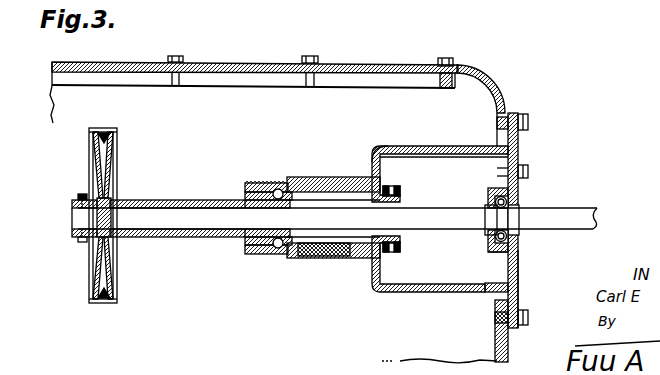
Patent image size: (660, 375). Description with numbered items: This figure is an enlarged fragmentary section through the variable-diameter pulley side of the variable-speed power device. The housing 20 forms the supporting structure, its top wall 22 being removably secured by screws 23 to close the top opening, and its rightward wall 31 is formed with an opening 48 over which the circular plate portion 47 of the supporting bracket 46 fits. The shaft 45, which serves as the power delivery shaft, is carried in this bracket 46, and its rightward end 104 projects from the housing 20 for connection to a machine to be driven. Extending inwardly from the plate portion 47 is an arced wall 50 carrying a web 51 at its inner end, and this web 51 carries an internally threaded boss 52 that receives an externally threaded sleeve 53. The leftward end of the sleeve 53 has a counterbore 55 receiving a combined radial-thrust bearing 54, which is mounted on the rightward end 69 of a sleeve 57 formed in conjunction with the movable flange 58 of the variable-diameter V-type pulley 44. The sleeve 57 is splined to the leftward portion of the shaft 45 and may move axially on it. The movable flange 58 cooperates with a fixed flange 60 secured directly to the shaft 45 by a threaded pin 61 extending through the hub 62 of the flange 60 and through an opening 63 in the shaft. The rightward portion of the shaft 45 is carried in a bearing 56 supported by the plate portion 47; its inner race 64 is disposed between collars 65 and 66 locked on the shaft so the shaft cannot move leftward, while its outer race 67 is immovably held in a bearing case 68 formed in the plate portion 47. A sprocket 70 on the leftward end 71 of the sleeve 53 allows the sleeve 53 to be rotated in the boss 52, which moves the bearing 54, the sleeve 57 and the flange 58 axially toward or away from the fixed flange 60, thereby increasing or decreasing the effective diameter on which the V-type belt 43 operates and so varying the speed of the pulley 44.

The housing 20 is at (496, 93).
The top wall 22 is at (380, 64).
The screws 23 is at (313, 57).
The rightward wall 31 is at (506, 346).
The V-type belt 43 is at (110, 128).
The variable-diameter V-type pulley 44 is at (93, 158).
The shaft 45 is at (301, 260).
The supporting bracket 46 is at (438, 145).
The circular plate portion 47 is at (519, 142).
The opening 48 is at (517, 302).
The arced wall 50 is at (466, 157).
The web 51 is at (371, 150).
The internally threaded boss 52 is at (347, 178).
The externally threaded sleeve 53 is at (337, 260).
The bearing 54 is at (275, 248).
The counterbore 55 is at (283, 184).
The bearing 56 is at (519, 196).
The sleeve 57 is at (139, 240).
The movable flange 58 is at (113, 173).
The fixed flange 60 is at (99, 266).
The threaded pin 61 is at (80, 196).
The hub 62 is at (84, 231).
The opening 63 is at (72, 212).
The inner race 64 is at (509, 238).
The collar 65 is at (493, 213).
The collar 66 is at (519, 222).
The outer race 67 is at (495, 199).
The bearing case 68 is at (500, 255).
The rightward end 69 is at (255, 247).
The sprocket 70 is at (396, 188).
The leftward end 71 is at (401, 245).
The rightward end 104 is at (578, 216).